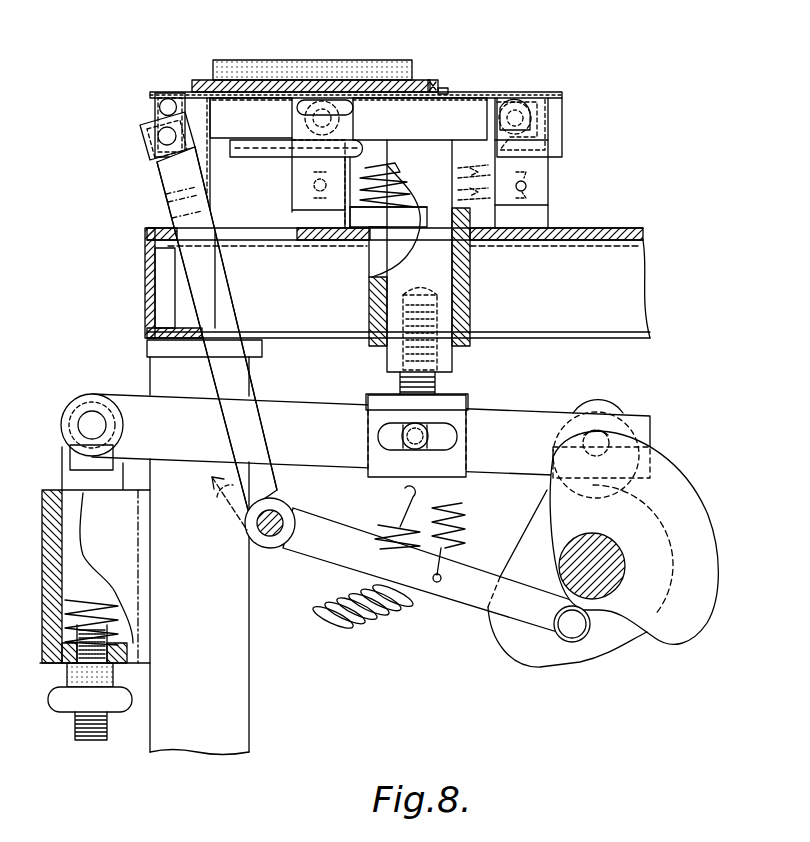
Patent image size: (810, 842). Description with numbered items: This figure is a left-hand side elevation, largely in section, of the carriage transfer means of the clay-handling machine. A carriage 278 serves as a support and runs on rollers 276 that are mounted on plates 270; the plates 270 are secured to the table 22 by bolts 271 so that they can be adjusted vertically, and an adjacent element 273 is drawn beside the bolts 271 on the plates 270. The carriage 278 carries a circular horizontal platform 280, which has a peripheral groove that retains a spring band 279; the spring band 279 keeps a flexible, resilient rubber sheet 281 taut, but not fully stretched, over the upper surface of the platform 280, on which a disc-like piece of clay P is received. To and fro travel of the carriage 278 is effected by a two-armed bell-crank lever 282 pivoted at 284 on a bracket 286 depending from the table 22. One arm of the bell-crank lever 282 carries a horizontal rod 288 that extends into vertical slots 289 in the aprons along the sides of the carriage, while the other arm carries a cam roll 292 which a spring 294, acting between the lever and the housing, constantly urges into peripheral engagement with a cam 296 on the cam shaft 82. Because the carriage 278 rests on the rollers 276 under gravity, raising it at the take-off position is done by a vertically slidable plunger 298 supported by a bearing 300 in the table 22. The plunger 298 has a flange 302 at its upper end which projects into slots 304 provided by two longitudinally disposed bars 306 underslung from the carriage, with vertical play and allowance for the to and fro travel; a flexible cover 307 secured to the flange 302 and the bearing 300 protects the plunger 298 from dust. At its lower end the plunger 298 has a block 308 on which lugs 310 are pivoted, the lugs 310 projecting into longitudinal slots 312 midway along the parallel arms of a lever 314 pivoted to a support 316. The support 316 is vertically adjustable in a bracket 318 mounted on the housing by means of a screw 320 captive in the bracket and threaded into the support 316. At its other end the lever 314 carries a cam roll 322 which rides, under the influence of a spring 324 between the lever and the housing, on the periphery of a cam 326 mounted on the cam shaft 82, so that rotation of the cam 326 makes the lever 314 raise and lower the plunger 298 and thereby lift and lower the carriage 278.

The platen P is at (358, 62).
The circular horizontal platform 280 is at (413, 80).
The flexible resilient rubber sheet 281 is at (436, 84).
The spring band 279 is at (444, 92).
The carriage 278 is at (522, 95).
The rollers 276 is at (556, 127).
The spring 273 is at (530, 176).
The bolts 271 is at (526, 186).
The plates 270 is at (540, 196).
The vertical slots 289 is at (160, 110).
The horizontal rod 288 is at (168, 136).
The table 22 is at (160, 226).
The slots 304 is at (254, 132).
The bars 306 is at (273, 153).
The flange 302 is at (445, 118).
The flexible cover 307 is at (380, 202).
The bearing 300 is at (380, 302).
The bell-crank lever 282 is at (205, 268).
The plunger 298 is at (437, 252).
The lever 314 is at (147, 408).
The longitudinal slots 312 is at (392, 430).
The block 308 is at (453, 400).
The cam roll 322 is at (598, 409).
The lugs 310 is at (403, 440).
The cam 296 is at (673, 480).
The support 316 is at (88, 482).
The bracket 286 is at (206, 503).
The pivot 284 is at (260, 523).
The spring 294 is at (467, 513).
The cam shaft 82 is at (606, 563).
The spring 324 is at (383, 613).
The cam 326 is at (518, 642).
The cam roll 292 is at (580, 634).
The bracket 318 is at (145, 620).
The screw 320 is at (106, 735).